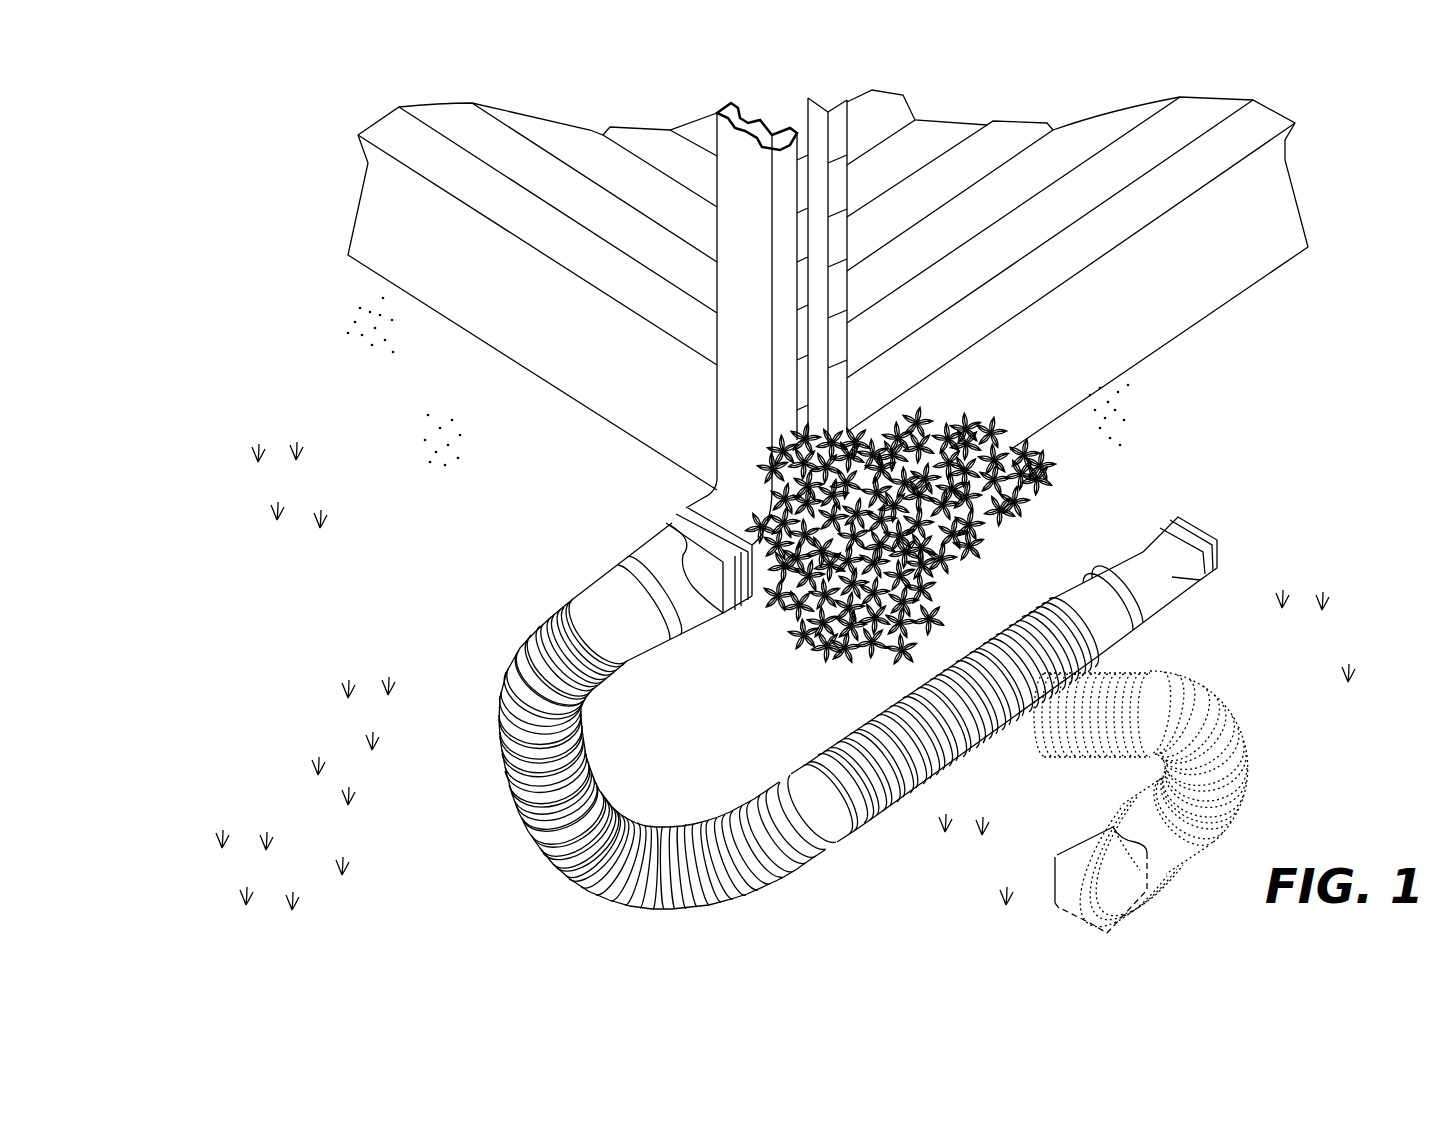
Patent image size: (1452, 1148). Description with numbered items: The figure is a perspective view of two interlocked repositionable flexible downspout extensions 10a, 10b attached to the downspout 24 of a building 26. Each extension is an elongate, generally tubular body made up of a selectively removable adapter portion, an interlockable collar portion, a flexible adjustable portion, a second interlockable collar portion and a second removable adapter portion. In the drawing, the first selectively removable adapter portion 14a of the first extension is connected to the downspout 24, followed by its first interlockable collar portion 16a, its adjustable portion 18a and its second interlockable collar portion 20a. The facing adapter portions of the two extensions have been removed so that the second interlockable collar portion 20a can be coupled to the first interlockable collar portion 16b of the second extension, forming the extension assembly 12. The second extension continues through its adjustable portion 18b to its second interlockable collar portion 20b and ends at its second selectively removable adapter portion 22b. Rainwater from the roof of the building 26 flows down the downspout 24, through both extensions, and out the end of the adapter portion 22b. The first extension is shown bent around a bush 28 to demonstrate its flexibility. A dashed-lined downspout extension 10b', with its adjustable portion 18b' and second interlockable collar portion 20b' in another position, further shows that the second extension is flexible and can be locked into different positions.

The downspout extension 10a is at (497, 838).
The downspout extension 10b is at (961, 700).
The dashed-lined downspout extension 10b' is at (1179, 790).
The extension assembly 12 is at (820, 715).
The first selectively removable adapter portion 14a is at (683, 495).
The first interlockable collar portion 16a is at (612, 568).
The first interlockable collar portion 16b is at (880, 820).
The adjustable portion 18a is at (497, 790).
The adjustable portion 18b is at (935, 676).
The adjustable portion 18b' is at (1237, 758).
The second interlockable collar portion 20a is at (803, 873).
The second interlockable collar portion 20b is at (1114, 602).
The second interlockable collar portion 20b' is at (1161, 852).
The second selectively removable adapter portion 22b is at (1175, 508).
The downspout 24 is at (757, 450).
The building 26 is at (995, 412).
The bush 28 is at (1064, 497).